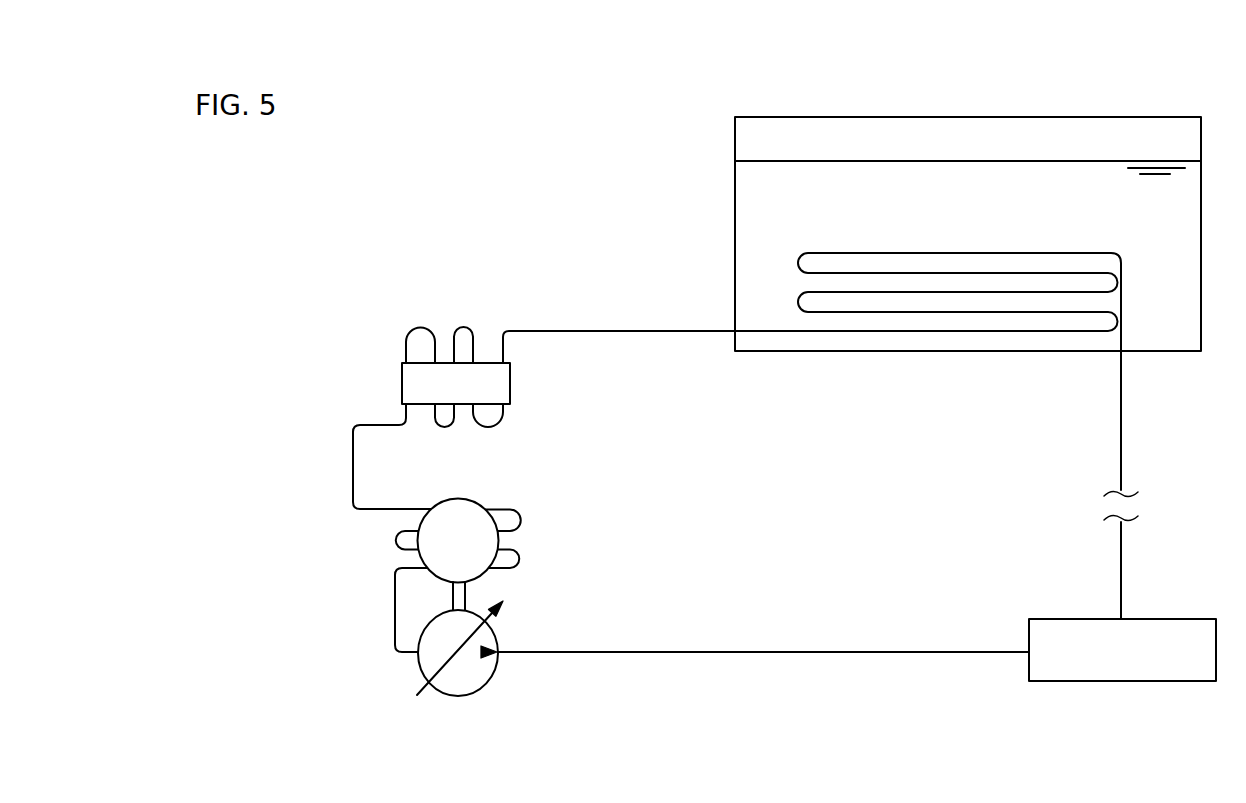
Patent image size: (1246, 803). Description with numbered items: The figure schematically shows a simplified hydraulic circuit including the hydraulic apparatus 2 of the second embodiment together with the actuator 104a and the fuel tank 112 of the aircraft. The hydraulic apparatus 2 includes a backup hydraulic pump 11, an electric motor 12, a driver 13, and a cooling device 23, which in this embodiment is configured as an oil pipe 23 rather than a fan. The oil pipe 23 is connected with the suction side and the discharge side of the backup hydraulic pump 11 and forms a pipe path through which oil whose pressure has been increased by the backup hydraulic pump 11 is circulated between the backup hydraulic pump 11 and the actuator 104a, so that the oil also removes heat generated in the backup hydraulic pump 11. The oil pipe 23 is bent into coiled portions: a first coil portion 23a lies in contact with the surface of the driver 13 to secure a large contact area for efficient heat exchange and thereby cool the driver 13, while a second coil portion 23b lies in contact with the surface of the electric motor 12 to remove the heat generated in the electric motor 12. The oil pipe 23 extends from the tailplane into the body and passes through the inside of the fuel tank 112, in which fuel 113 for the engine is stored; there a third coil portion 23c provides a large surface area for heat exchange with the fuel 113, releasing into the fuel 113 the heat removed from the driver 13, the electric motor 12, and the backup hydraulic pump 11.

The hydraulic apparatus 2 is at (427, 454).
The backup hydraulic pump 11 is at (497, 630).
The electric motor 12 is at (418, 557).
The driver 13 is at (402, 383).
The cooling device 23 is at (745, 409).
The first coil portion 23a is at (470, 323).
The second coil portion 23b is at (527, 509).
The third coil portion 23c is at (802, 255).
The actuator 104a is at (1078, 618).
The fuel tank 112 is at (968, 189).
The fuel 113 is at (1023, 168).